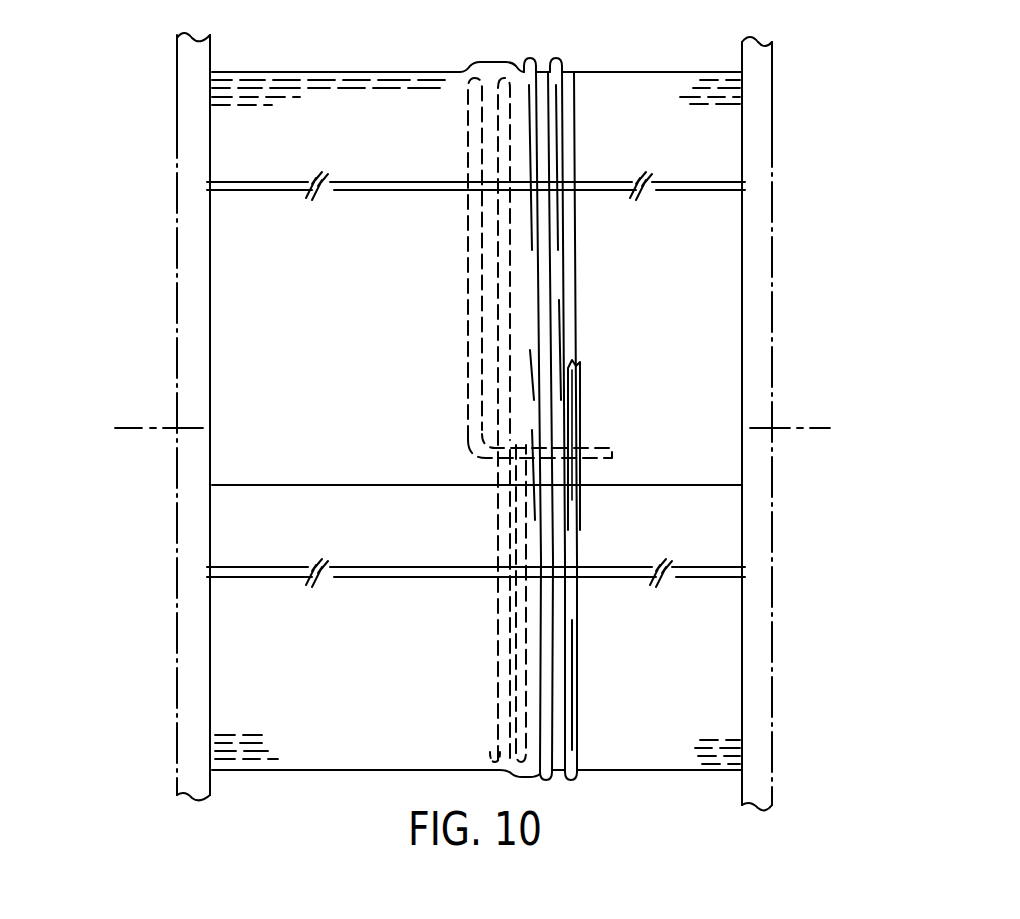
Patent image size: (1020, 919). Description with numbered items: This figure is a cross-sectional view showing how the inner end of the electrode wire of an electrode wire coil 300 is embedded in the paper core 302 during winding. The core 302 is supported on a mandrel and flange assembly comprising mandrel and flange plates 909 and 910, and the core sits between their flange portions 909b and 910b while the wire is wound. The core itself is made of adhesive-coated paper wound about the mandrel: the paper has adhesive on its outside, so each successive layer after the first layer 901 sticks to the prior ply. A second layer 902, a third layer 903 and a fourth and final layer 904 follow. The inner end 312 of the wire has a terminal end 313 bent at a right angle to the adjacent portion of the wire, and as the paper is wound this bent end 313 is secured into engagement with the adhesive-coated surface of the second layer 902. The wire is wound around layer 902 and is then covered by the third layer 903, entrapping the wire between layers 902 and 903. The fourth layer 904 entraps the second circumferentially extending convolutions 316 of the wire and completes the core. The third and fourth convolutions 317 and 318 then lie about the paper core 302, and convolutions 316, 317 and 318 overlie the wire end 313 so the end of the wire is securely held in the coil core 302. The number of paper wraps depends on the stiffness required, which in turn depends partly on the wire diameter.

The electrode wire coil 300 is at (556, 62).
The core 302 is at (320, 770).
The inner end of the electrode wire 312 is at (467, 350).
The terminal end 313 is at (603, 453).
The second convolutions 316 is at (494, 276).
The third convolution 317 is at (527, 263).
The fourth convolution 318 is at (552, 303).
The first layer 901 is at (244, 106).
The second layer 902 is at (258, 93).
The third layer 903 is at (292, 92).
The fourth layer 904 is at (368, 82).
The mandrel and flange plate 909 is at (177, 240).
The flange portion 909b is at (186, 116).
The mandrel and flange plate 910 is at (772, 212).
The flange portion 910b is at (772, 120).